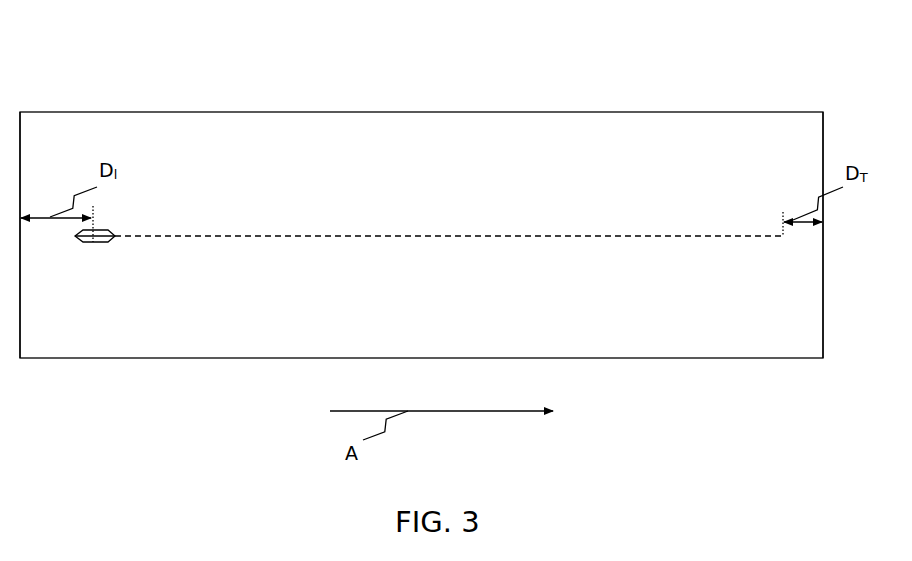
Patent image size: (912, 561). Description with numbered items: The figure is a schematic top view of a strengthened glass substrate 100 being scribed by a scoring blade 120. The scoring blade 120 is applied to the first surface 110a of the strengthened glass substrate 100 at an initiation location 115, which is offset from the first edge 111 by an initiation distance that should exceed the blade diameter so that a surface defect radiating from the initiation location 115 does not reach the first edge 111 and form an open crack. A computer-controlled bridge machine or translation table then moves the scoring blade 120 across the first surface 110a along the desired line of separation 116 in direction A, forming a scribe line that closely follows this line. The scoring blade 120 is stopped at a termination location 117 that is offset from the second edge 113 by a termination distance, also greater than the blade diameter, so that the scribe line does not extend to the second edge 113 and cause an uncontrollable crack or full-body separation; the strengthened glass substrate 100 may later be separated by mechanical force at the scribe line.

The strengthened glass substrate 100 is at (620, 94).
The first surface 110a is at (460, 313).
The first edge 111 is at (22, 318).
The second edge 113 is at (823, 350).
The initiation location 115 is at (97, 233).
The desired line of separation 116 is at (418, 236).
The termination location 117 is at (783, 235).
The scoring blade 120 is at (97, 240).